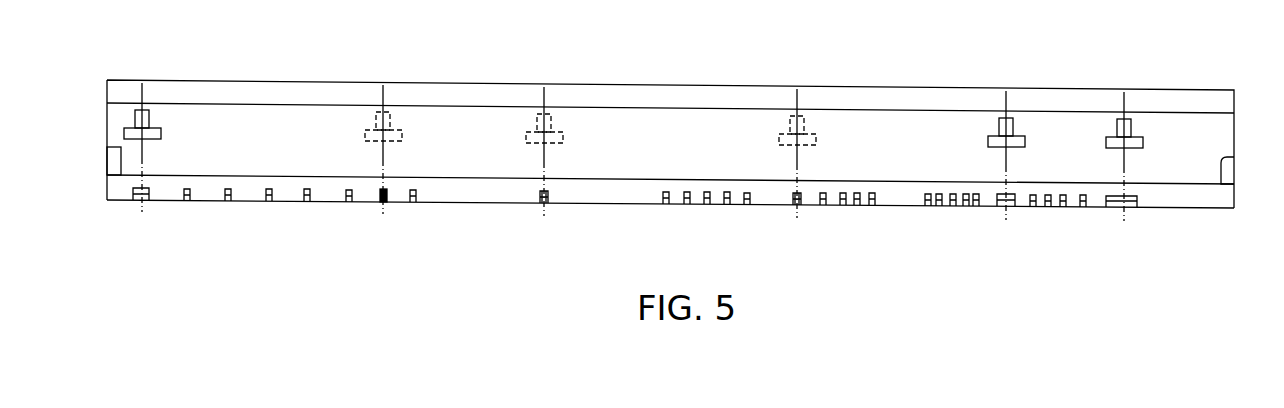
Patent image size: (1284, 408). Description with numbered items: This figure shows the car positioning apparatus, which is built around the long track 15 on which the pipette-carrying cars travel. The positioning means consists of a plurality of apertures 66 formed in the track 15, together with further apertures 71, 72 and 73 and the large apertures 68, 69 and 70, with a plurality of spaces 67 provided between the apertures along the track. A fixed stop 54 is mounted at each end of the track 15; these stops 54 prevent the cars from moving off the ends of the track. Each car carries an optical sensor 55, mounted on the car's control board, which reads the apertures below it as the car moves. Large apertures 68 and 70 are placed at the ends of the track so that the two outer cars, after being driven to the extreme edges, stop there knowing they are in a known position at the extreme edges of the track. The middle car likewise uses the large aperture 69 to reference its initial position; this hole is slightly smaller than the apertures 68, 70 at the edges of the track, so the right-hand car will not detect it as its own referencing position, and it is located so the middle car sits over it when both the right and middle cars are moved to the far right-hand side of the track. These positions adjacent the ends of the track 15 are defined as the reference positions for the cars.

The track 15 is at (658, 84).
The stop 54 is at (113, 147).
The optical sensor 55 is at (146, 110).
The apertures 66 is at (269, 204).
The spaces 67 is at (214, 204).
The large aperture 68 is at (1127, 208).
The large aperture 69 is at (1009, 207).
The large aperture 70 is at (143, 203).
The aperture 71 is at (383, 204).
The aperture 72 is at (544, 205).
The aperture 73 is at (797, 206).